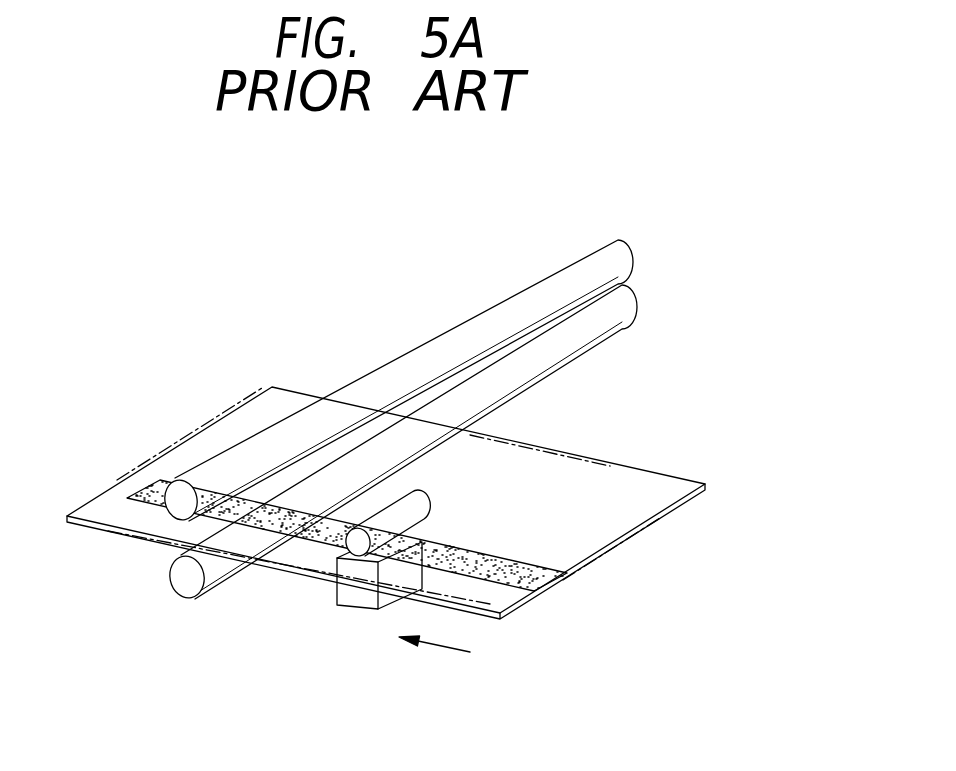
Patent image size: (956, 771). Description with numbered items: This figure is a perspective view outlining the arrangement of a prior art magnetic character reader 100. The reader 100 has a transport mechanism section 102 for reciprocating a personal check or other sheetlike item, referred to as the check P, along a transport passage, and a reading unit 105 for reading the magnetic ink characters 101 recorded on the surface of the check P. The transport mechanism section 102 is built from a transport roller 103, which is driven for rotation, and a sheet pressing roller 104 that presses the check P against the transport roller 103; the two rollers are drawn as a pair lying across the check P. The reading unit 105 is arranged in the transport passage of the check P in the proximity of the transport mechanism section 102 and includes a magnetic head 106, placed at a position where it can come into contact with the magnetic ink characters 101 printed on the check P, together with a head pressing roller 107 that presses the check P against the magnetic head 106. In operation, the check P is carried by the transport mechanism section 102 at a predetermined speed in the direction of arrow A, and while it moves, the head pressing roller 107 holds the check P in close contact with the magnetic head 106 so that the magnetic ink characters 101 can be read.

The magnetic character reader 100 is at (198, 267).
The magnetic ink characters 101 is at (563, 576).
The transport mechanism section 102 is at (470, 222).
The transport roller 103 is at (483, 377).
The sheet pressing roller 104 is at (393, 367).
The reading unit 105 is at (312, 660).
The magnetic head 106 is at (352, 573).
The head pressing roller 107 is at (332, 545).
The check P is at (564, 462).
The arrow A is at (447, 657).